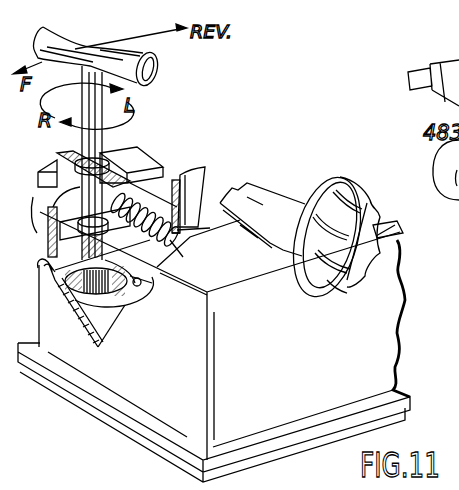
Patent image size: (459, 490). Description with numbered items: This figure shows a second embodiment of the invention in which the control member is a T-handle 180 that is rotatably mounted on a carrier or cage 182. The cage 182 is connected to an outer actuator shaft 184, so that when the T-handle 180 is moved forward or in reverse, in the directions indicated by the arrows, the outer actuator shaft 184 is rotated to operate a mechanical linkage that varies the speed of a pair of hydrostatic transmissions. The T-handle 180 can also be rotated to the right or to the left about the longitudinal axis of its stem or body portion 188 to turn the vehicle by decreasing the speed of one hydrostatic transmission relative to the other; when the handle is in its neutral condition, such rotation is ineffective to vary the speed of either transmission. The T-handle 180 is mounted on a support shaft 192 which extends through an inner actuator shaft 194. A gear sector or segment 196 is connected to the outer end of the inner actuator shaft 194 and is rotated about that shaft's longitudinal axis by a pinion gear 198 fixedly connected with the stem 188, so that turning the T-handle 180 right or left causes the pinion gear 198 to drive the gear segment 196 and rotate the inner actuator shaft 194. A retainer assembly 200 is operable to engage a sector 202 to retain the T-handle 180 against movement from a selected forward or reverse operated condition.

The T-handle 180 is at (162, 67).
The carrier or cage 182 is at (143, 166).
The outer actuator shaft 184 is at (170, 235).
The stem or body portion 188 is at (101, 142).
The support shaft 192 is at (138, 287).
The inner actuator shaft 194 is at (170, 240).
The gear sector or segment 196 is at (60, 307).
The pinion gear 198 is at (120, 314).
The retainer assembly 200 is at (285, 186).
The sector 202 is at (207, 174).